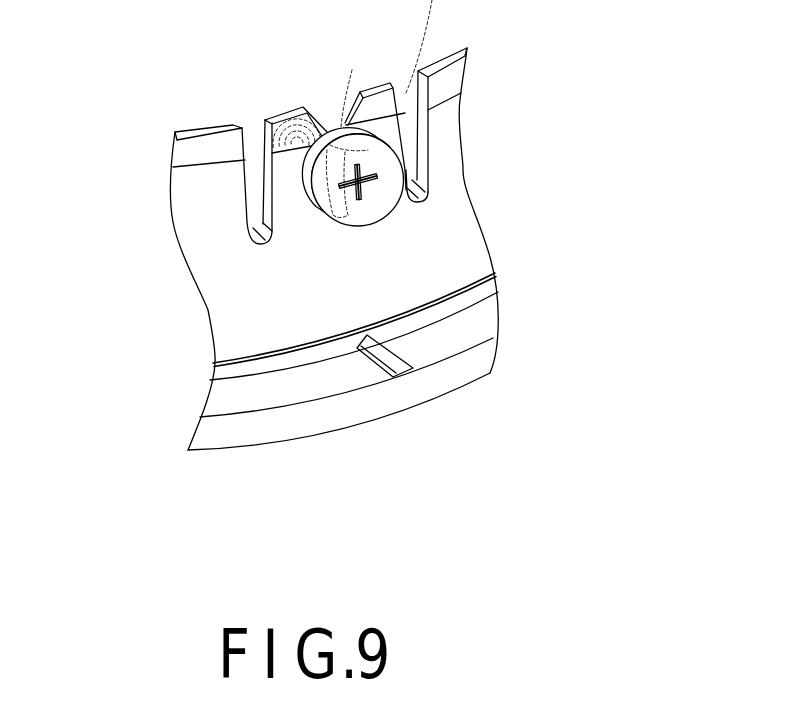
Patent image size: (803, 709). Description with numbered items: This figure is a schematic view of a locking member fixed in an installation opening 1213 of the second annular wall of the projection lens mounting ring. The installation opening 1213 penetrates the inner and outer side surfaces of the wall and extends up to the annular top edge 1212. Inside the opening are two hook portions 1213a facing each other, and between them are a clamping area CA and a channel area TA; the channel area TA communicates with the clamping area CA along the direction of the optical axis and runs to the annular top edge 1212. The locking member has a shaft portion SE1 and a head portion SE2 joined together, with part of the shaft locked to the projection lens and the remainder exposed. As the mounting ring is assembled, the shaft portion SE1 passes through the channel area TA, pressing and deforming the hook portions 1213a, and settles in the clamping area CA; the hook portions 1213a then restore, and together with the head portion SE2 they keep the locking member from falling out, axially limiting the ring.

The annular top edge 1212 is at (200, 133).
The installation opening 1213 is at (246, 195).
The hook portion 1213a is at (278, 123).
The shaft portion SE1 is at (330, 142).
The head portion SE2 is at (387, 165).
The channel area TA is at (390, 102).
The clamping area CA is at (367, 150).